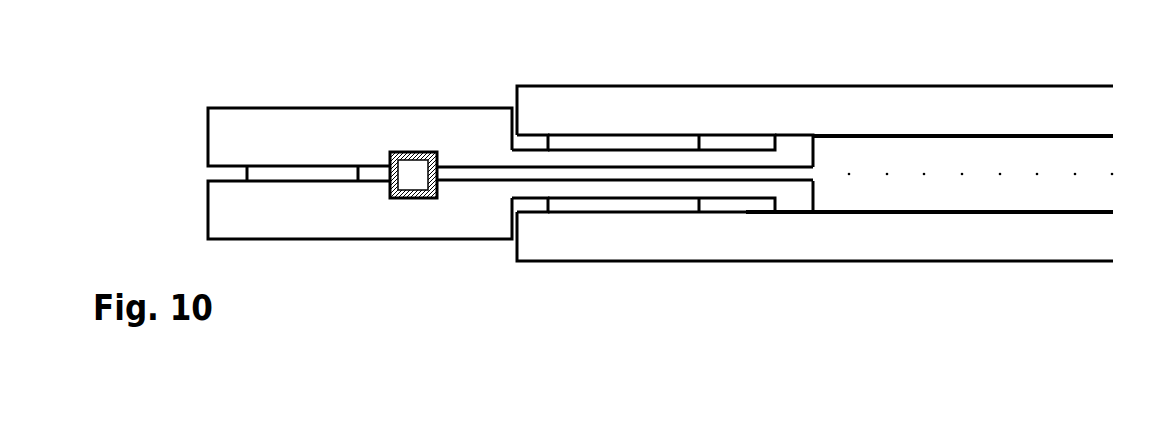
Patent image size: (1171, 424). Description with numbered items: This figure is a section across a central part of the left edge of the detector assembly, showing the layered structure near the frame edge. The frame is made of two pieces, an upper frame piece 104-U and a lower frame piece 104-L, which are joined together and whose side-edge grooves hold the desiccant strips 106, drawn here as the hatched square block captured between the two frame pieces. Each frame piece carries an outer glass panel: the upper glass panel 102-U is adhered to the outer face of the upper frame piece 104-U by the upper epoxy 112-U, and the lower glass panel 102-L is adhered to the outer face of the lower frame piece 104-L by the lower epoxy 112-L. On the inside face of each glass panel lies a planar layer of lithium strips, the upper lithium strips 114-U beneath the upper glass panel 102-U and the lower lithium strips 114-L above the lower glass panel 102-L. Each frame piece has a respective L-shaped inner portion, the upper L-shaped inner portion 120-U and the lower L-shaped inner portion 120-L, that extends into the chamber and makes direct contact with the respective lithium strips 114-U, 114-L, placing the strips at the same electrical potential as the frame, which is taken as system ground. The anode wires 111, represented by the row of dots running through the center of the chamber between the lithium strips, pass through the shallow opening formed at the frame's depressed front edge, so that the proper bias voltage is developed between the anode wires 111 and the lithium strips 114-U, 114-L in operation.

The upper glass panel 102-U is at (568, 92).
The lower glass panel 102-L is at (560, 250).
The upper frame piece 104-U is at (280, 117).
The lower frame piece 104-L is at (272, 233).
The desiccant strips 106 is at (418, 157).
The anode wires 111 is at (962, 174).
The upper epoxy 112-U is at (607, 138).
The lower epoxy 112-L is at (642, 207).
The upper lithium strips 114-U is at (839, 137).
The lower lithium strips 114-L is at (935, 213).
The upper L-shaped inner portion 120-U is at (785, 143).
The lower L-shaped inner portion 120-L is at (795, 207).